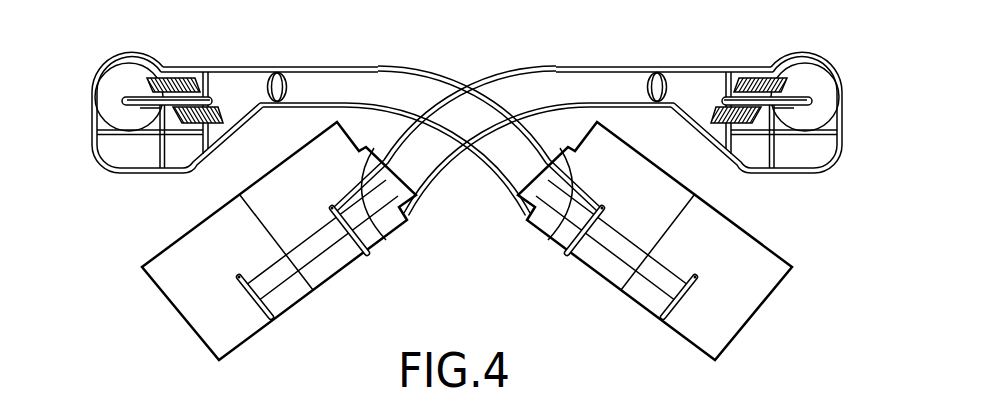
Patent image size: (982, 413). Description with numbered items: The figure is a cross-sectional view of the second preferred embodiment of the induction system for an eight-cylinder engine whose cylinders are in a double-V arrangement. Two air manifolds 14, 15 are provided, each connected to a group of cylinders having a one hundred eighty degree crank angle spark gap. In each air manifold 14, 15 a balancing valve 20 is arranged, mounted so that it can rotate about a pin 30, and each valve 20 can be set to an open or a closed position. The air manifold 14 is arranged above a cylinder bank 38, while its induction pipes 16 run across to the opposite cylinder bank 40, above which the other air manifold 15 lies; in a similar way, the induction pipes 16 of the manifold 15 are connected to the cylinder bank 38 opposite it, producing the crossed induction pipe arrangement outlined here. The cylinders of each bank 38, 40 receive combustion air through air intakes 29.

The air manifold 14 is at (117, 66).
The air manifold 15 is at (817, 66).
The induction pipes 16 is at (507, 84).
The balancing valve 20 is at (193, 75).
The air intakes 29 is at (377, 243).
The pin 30 is at (92, 136).
The cylinder bank 38 is at (205, 337).
The cylinder bank 40 is at (731, 331).